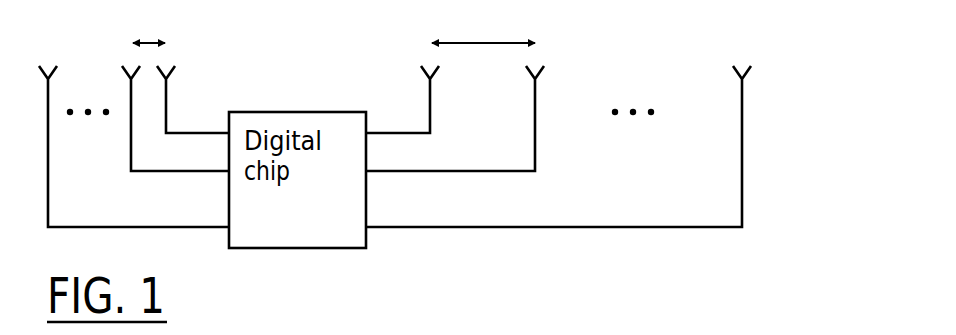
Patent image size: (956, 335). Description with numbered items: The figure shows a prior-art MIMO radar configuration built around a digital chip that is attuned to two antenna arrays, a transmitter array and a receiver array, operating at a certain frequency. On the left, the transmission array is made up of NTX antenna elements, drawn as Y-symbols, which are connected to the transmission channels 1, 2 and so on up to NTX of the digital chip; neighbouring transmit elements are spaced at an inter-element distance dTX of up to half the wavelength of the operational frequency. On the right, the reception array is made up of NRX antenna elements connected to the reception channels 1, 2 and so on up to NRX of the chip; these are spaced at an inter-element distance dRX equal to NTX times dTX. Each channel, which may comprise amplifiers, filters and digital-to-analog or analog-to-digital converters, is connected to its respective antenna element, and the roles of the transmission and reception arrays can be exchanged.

The first channel 1 is at (298, 99).
The second channel 2 is at (333, 118).
The transmission antenna elements NTX is at (134, 146).
The reception antenna elements NRX is at (558, 146).
The transmission inter-element distance dTX is at (152, 26).
The reception inter-element distance dRX is at (477, 26).